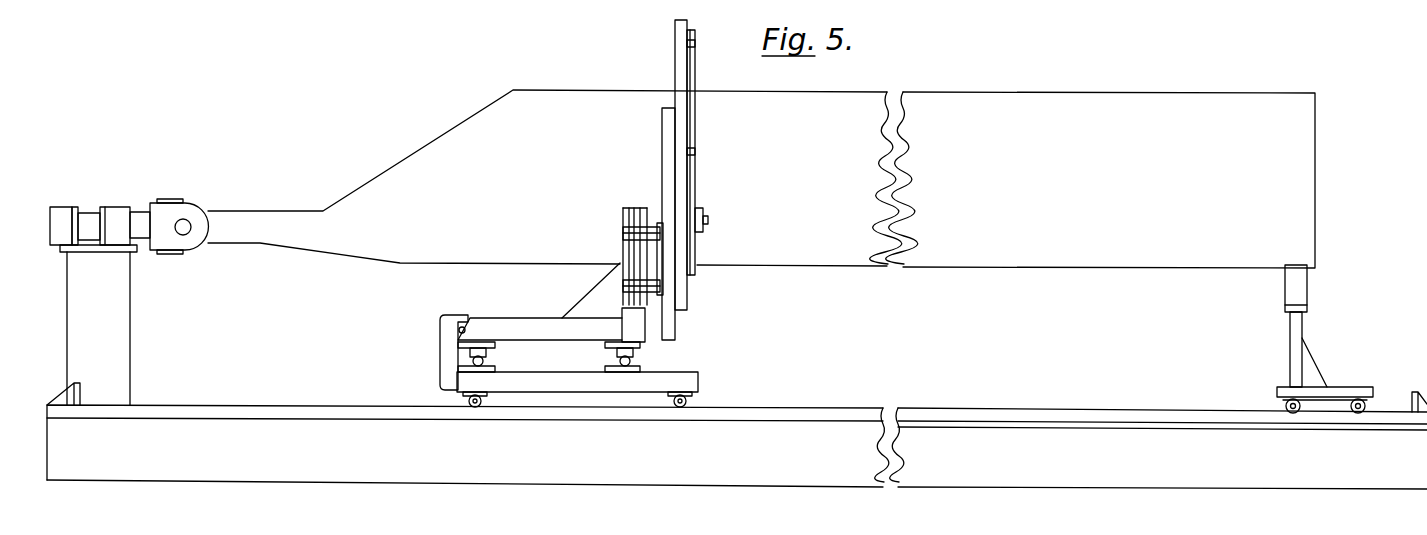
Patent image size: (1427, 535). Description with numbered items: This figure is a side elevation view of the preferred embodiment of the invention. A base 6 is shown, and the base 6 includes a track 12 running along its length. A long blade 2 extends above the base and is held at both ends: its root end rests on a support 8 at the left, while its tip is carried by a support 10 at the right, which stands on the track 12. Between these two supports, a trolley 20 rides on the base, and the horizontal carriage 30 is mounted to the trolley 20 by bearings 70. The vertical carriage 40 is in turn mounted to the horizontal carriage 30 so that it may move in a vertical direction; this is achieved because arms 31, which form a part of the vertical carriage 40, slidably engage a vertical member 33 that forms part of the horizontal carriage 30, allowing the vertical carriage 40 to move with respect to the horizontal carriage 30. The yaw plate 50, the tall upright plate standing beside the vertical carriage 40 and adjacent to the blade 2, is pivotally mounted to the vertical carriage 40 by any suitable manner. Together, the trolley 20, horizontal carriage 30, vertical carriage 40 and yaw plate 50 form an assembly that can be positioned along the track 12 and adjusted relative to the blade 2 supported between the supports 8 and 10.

The blade 2 is at (977, 102).
The base 6 is at (950, 474).
The support 8 is at (120, 315).
The support 10 is at (1300, 292).
The track 12 is at (930, 408).
The trolley 20 is at (700, 382).
The horizontal carriage 30 is at (524, 316).
The arms 31 is at (631, 236).
The vertical member 33 is at (620, 250).
The vertical carriage 40 is at (665, 168).
The yaw plate 50 is at (677, 60).
The bearings 70 is at (606, 356).